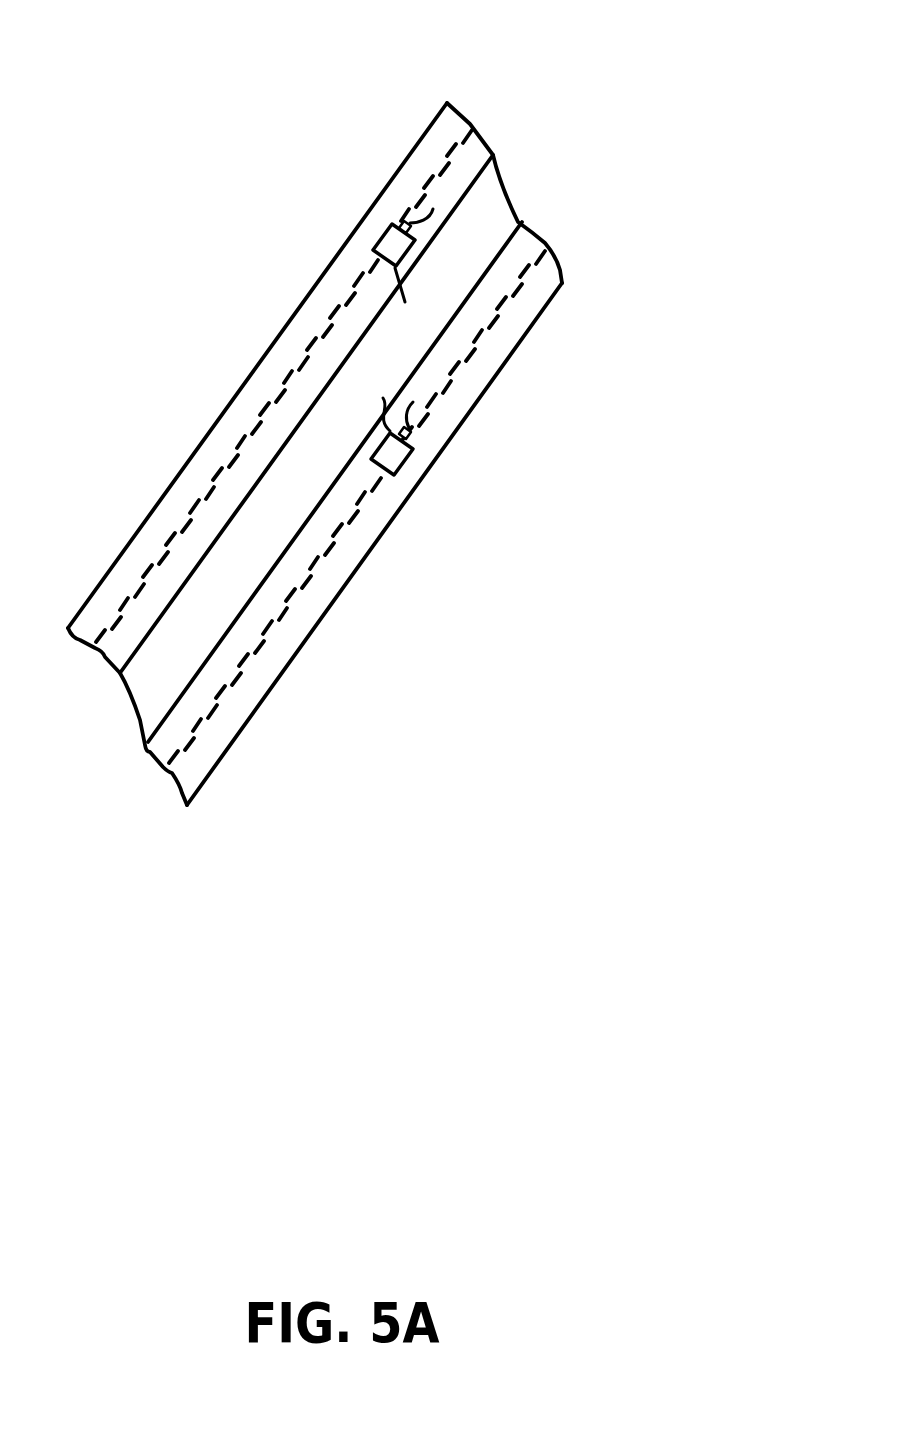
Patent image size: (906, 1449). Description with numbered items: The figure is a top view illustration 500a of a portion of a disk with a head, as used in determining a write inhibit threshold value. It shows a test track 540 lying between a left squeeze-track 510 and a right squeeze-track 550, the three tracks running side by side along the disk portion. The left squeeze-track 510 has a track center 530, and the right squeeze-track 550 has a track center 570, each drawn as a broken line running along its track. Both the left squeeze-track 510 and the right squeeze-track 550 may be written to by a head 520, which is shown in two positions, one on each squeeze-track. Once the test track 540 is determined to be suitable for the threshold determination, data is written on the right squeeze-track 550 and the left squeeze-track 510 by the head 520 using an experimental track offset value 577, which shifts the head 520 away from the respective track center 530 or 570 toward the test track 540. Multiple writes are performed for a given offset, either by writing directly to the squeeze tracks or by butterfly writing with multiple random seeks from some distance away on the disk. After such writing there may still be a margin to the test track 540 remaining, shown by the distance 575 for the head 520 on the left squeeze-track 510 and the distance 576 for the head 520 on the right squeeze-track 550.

The lighting strip assembly 500a is at (272, 33).
The left squeeze-track 510 is at (435, 142).
The head 520 is at (393, 240).
The track center 530 is at (338, 310).
The test track 540 is at (398, 347).
The right squeeze-track 550 is at (452, 409).
The track center 570 is at (317, 577).
The distance 575 is at (416, 304).
The distance 576 is at (370, 397).
The track offset value 577 is at (436, 304).